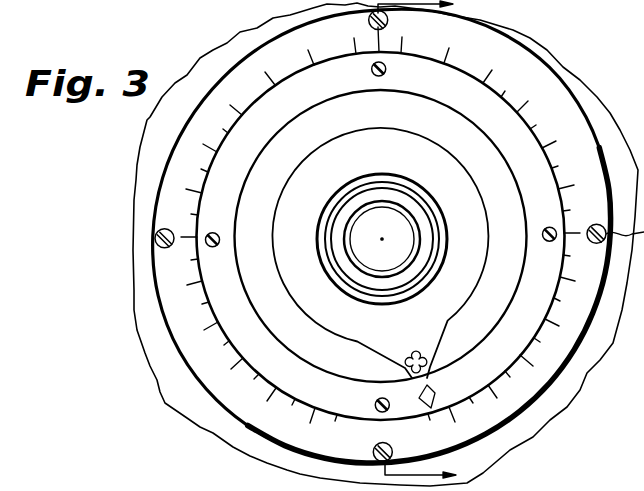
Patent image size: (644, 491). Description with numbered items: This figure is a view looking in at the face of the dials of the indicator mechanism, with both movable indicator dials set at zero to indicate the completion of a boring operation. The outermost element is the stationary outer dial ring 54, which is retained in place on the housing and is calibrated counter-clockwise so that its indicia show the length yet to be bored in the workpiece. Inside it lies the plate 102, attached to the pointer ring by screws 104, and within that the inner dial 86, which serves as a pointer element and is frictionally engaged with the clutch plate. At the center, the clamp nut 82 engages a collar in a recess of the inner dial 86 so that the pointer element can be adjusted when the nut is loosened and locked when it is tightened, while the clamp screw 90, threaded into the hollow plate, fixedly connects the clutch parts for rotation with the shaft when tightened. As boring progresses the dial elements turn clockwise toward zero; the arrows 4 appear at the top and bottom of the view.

The direction arrow 4 is at (425, 239).
The stationary outer dial ring 54 is at (560, 108).
The plate 102 is at (452, 92).
The screws 104 is at (373, 75).
The inner dial 86 is at (404, 153).
The clamp nut 82 is at (434, 263).
The clamp screw 90 is at (408, 232).